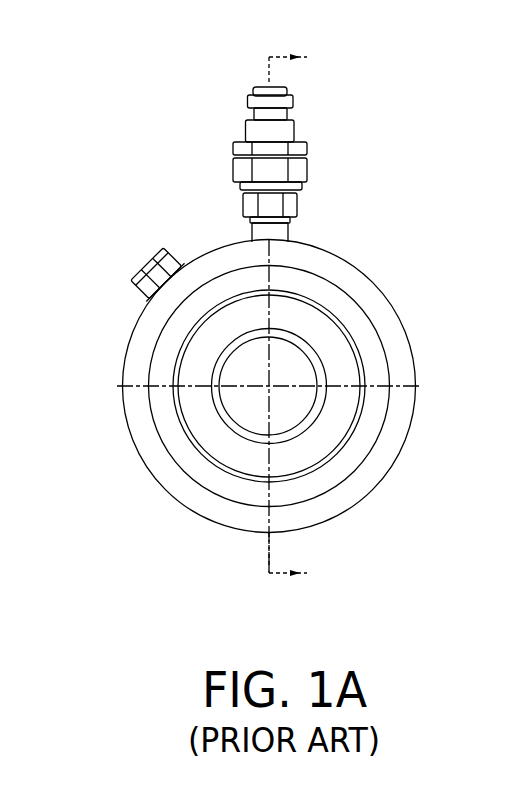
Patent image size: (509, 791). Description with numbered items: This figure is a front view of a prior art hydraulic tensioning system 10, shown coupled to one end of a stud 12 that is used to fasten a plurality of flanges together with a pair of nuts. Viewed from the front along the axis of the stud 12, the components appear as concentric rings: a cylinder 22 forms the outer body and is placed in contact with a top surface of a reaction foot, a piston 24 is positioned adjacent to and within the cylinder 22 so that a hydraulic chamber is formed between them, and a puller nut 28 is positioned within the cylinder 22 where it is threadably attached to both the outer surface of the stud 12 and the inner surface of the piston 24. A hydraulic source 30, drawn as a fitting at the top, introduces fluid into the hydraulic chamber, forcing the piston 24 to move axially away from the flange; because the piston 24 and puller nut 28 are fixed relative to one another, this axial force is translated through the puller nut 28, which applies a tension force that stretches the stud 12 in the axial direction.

The hydraulic tensioning system 10 is at (271, 314).
The stud 12 is at (293, 410).
The cylinder 22 is at (395, 437).
The piston 24 is at (375, 353).
The puller nut 28 is at (305, 318).
The hydraulic source 30 is at (307, 165).